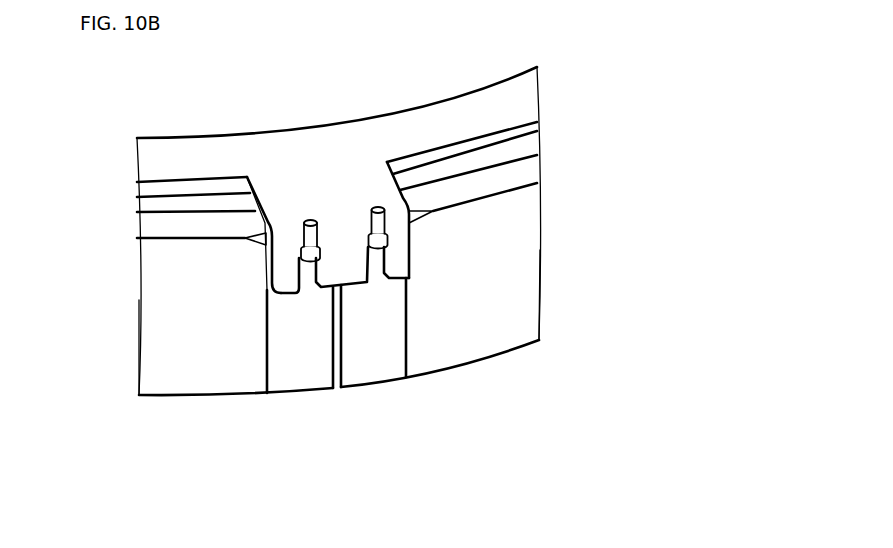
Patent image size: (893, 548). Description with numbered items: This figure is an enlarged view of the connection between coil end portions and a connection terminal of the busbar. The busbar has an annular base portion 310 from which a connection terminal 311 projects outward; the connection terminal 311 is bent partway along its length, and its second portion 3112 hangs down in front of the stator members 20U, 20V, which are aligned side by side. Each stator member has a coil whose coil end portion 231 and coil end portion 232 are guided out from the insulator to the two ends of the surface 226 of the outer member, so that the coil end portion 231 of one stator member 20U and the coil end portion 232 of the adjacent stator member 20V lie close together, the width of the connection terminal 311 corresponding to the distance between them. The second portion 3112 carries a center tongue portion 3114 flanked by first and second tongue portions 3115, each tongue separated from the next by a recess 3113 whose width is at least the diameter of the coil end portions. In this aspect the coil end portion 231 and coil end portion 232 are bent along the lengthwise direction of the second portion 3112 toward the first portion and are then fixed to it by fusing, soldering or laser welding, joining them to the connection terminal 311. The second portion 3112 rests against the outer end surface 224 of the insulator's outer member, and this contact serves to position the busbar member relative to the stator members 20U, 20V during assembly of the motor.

The base portion 310 is at (490, 98).
The connection terminal 311 is at (325, 192).
The coil end portion 231 is at (307, 218).
The coil end portion 232 is at (377, 205).
The surface of the outer member 226 is at (149, 229).
The second portion 3112 is at (398, 237).
The tongue portion 3115 is at (268, 272).
The recess 3113 is at (302, 291).
The tongue portion 3114 is at (351, 262).
The outer end surface 224 is at (157, 384).
The stator member 20U is at (157, 352).
The stator member 20V is at (528, 292).